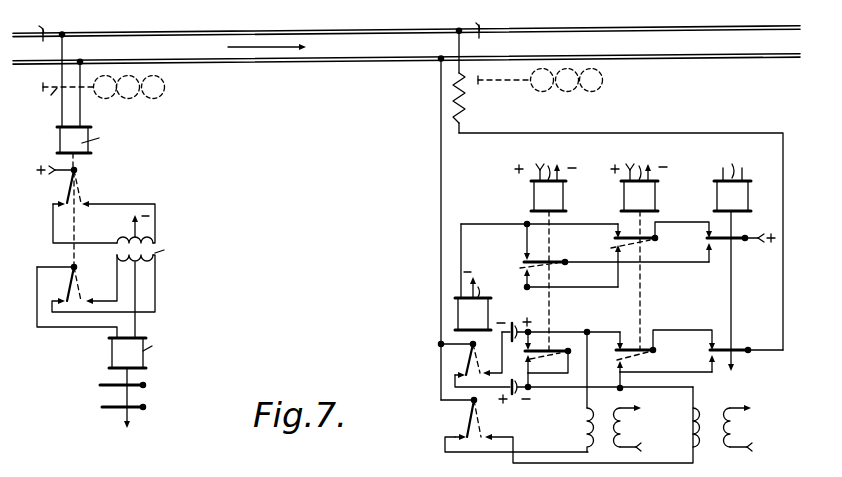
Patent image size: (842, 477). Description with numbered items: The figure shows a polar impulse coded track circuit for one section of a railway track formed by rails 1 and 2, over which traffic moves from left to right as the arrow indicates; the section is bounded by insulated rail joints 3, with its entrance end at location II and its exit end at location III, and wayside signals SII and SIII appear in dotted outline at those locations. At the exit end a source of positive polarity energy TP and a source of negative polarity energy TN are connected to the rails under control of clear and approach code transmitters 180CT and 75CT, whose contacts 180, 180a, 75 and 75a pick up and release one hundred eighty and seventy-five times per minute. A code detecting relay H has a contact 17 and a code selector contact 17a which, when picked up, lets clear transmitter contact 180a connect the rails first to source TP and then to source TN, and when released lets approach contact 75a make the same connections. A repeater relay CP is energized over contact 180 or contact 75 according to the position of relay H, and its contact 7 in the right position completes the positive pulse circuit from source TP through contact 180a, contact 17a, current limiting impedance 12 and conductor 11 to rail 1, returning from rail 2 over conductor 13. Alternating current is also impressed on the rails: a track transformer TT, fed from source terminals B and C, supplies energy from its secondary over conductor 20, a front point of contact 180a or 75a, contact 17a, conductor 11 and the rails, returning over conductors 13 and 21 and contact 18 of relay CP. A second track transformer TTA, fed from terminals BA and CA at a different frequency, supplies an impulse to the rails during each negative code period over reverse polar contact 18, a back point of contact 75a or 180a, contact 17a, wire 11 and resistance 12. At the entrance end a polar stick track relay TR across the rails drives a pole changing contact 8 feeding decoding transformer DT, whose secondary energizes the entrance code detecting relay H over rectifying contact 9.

The track rail 1 is at (317, 29).
The track rail 2 is at (317, 61).
The insulated rail joint 3 is at (43, 68).
The contact of repeater relay CP 7 is at (470, 360).
The pole changing contact 8 is at (65, 191).
The rectifying contact 9 is at (67, 286).
The conductor 11 is at (782, 291).
The current limiting impedance 12 is at (463, 114).
The conductor 13 is at (441, 195).
The contact of relay H 17 is at (100, 385).
The code selector contact of relay H 17a is at (101, 407).
The contact of code repeater CP 18 is at (465, 421).
The conductor 20 is at (586, 404).
The conductor 21 is at (441, 397).
The approach coder contact 75 is at (523, 262).
The approach transmitter contact 75a is at (553, 347).
The clear coder contact 180 is at (615, 239).
The clear transmitter contact 180a is at (651, 355).
The approach code transmitter 75CT is at (547, 245).
The clear code transmitter 180CT is at (642, 244).
The code detecting relay H is at (430, 254).
The track relay TR is at (91, 140).
The decoding transformer DT is at (155, 239).
The repeater relay CP is at (484, 282).
The source of positive polarity energy TP is at (493, 318).
The source of negative polarity energy TN is at (516, 407).
The track transformer TT is at (605, 421).
The second track transformer TTA is at (715, 414).
The entrance end of track section II is at (38, 25).
The exit end of track section III is at (479, 22).
The wayside signal SII is at (91, 98).
The wayside signal SIII is at (540, 92).
The alternating current source terminal C is at (638, 408).
The alternating current source terminal B is at (638, 447).
The alternating current source terminal CA is at (757, 408).
The alternating current source terminal BA is at (757, 448).